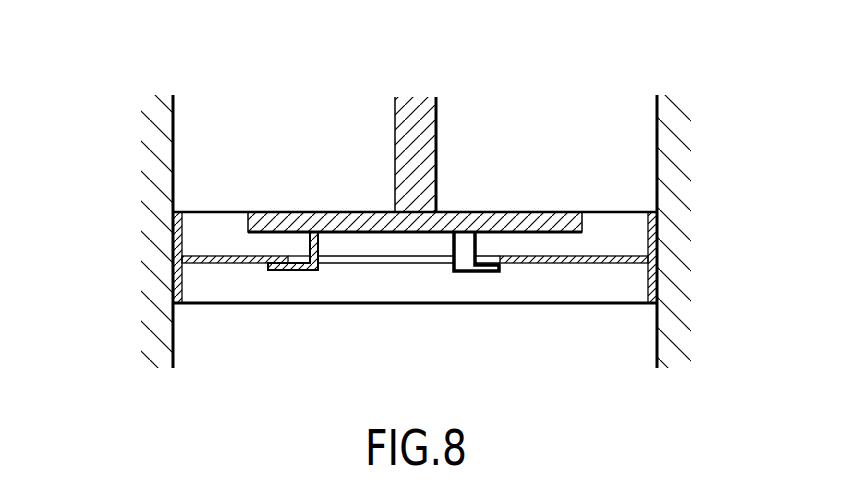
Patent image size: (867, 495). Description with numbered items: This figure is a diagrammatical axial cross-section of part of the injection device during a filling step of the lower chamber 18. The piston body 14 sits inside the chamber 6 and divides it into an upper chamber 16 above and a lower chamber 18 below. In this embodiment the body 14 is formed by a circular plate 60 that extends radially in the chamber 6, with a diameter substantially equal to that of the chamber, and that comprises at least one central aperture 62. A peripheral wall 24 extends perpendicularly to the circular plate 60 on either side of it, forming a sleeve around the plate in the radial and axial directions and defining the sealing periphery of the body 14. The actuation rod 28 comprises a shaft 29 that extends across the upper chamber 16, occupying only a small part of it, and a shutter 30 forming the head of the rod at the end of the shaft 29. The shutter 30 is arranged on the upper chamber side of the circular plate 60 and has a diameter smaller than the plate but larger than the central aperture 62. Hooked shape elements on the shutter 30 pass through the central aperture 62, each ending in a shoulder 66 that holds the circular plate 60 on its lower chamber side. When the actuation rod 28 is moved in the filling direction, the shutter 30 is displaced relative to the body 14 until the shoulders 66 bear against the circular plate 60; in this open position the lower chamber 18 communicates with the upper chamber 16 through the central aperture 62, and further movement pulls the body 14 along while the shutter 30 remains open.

The chamber 6 is at (635, 155).
The body 14 is at (198, 262).
The upper chamber 16 is at (200, 155).
The lower chamber 18 is at (213, 350).
The peripheral wall 24 is at (658, 232).
The actuation rod 28 is at (427, 143).
The shaft 29 is at (403, 107).
The shutter 30 is at (279, 212).
The circular plate 60 is at (577, 267).
The central aperture 62 is at (383, 262).
The shoulder 66 is at (275, 272).